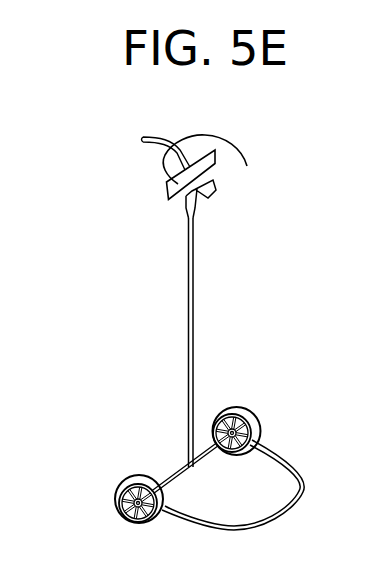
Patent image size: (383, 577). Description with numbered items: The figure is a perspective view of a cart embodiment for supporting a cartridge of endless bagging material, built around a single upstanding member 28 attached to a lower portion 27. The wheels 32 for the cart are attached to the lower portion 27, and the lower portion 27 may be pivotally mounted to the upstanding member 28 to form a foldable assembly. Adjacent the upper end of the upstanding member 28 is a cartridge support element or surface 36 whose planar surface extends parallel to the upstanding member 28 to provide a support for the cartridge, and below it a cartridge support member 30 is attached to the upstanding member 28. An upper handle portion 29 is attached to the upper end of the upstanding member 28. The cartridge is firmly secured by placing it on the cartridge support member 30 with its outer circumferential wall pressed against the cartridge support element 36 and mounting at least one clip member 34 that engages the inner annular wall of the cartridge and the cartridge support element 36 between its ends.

The lower portion 27 is at (175, 470).
The upstanding member 28 is at (194, 320).
The upper handle portion 29 is at (162, 137).
The cartridge support member 30 is at (212, 192).
The wheels 32 is at (260, 423).
The clip member 34 is at (243, 152).
The cartridge support element 36 is at (166, 191).